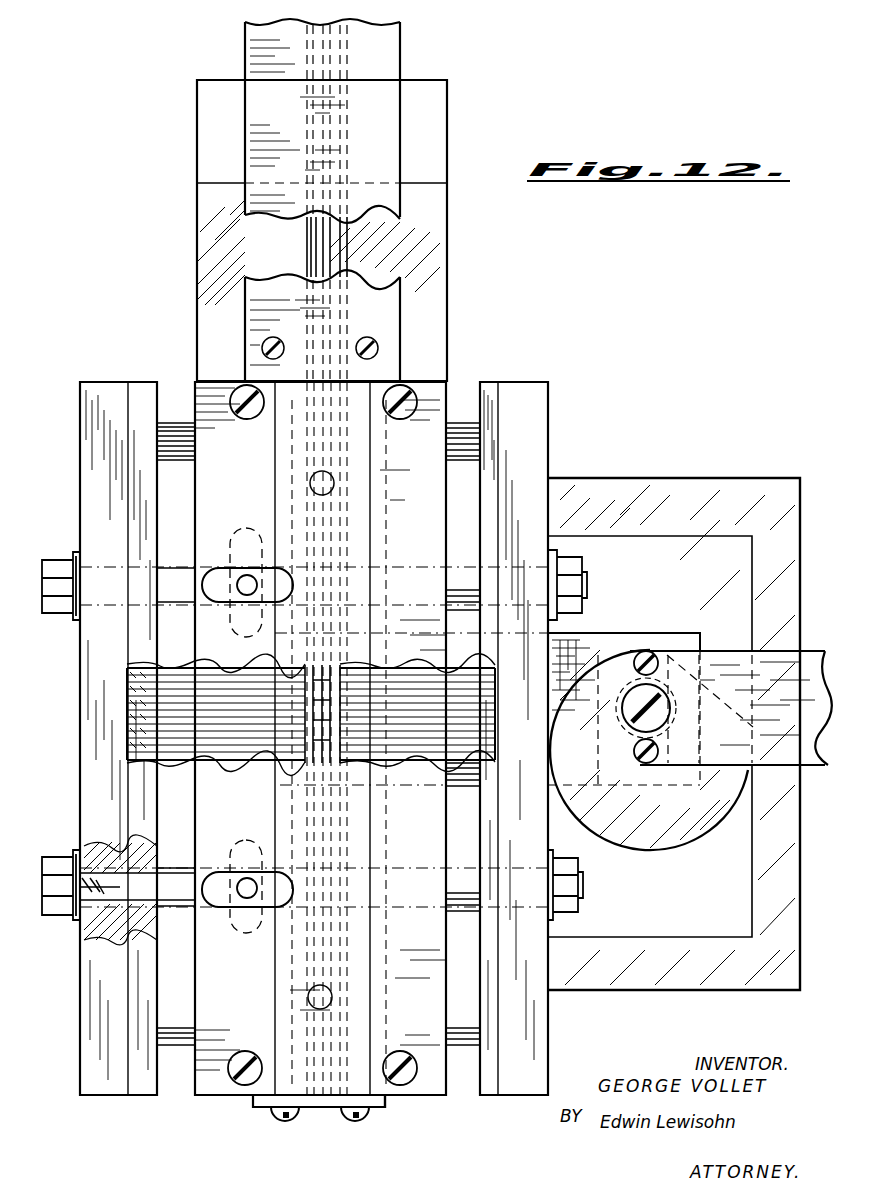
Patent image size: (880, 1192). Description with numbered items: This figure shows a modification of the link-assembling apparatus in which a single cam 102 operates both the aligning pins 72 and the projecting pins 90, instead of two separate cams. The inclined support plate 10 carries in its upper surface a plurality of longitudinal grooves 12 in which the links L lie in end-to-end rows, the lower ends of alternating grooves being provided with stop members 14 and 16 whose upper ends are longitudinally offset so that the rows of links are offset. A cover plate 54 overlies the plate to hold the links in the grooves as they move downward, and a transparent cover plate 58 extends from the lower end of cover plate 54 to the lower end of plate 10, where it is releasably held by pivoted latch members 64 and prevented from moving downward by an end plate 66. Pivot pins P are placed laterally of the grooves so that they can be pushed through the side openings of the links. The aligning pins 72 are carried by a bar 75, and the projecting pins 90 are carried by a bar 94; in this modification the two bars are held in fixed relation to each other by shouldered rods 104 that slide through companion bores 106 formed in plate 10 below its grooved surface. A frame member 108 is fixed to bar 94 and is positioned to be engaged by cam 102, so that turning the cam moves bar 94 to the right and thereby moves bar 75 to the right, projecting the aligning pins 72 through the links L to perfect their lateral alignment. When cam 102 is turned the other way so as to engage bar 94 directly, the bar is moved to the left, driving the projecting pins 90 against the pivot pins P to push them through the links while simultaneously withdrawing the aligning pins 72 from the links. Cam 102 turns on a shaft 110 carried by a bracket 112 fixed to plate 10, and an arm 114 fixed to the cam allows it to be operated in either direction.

The plate 10 is at (447, 318).
The longitudinal grooves 12 is at (335, 862).
The stop member 14 is at (308, 1110).
The stop member 16 is at (325, 1110).
The cover plate 54 is at (385, 287).
The transparent cover plate 58 is at (283, 1073).
The pivoted latch members 64 is at (215, 578).
The end plate 66 is at (383, 1105).
The aligning pins 72 is at (176, 764).
The bar 75 is at (105, 393).
The projecting pins 90 is at (408, 765).
The bar 94 is at (532, 390).
The cam 102 is at (637, 838).
The shouldered rods 104 is at (170, 605).
The bores 106 is at (430, 577).
The frame member 108 is at (606, 985).
The shaft 110 is at (668, 650).
The bracket 112 is at (585, 633).
The arm 114 is at (730, 653).
The links L is at (305, 669).
The pivot pins P is at (346, 674).